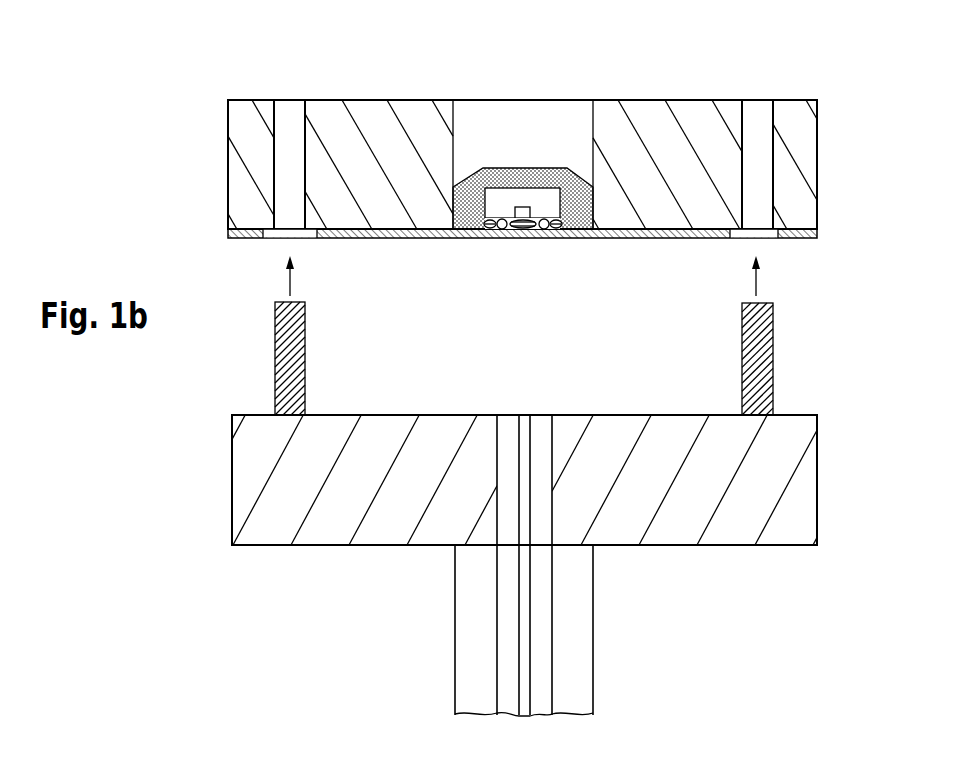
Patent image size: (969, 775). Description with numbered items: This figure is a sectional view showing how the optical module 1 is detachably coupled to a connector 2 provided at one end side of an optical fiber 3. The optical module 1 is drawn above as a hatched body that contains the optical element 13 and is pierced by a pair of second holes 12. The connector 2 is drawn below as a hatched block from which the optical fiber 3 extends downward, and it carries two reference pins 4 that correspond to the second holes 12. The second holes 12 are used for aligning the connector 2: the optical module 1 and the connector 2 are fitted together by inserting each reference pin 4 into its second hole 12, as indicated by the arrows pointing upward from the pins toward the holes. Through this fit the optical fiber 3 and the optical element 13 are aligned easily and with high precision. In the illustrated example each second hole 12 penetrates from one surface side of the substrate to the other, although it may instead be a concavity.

The optical module 1 is at (824, 61).
The connector 2 is at (824, 406).
The optical fiber 3 is at (585, 628).
The reference pin 4 is at (305, 355).
The second hole 12 is at (290, 92).
The optical element 13 is at (540, 190).